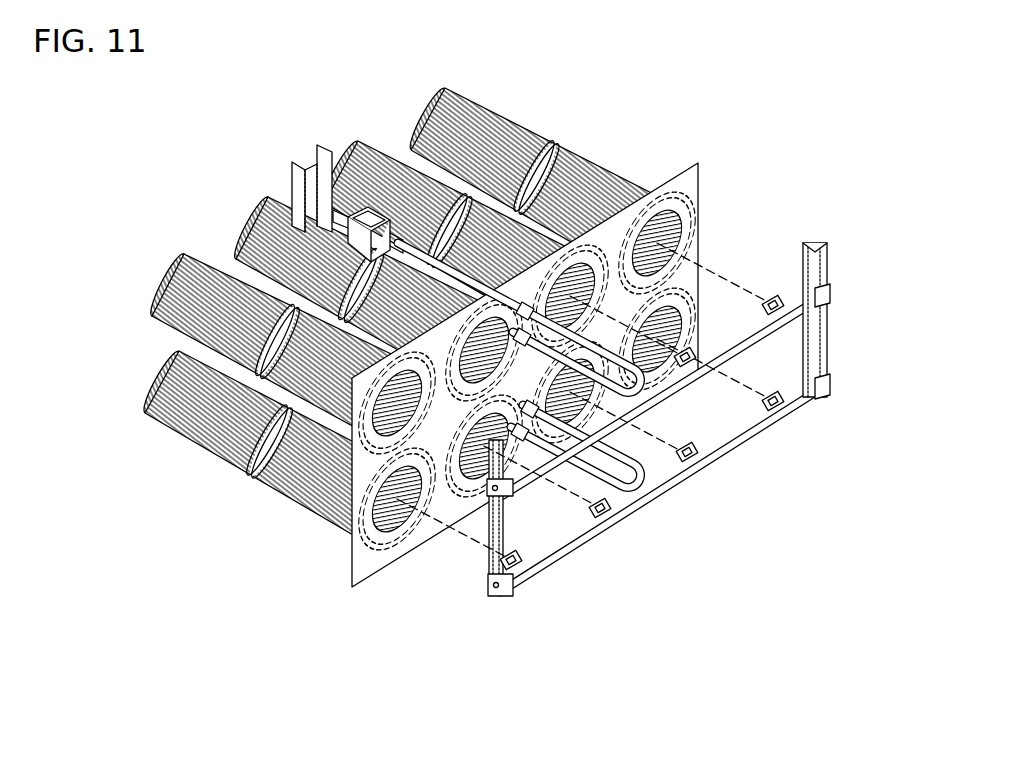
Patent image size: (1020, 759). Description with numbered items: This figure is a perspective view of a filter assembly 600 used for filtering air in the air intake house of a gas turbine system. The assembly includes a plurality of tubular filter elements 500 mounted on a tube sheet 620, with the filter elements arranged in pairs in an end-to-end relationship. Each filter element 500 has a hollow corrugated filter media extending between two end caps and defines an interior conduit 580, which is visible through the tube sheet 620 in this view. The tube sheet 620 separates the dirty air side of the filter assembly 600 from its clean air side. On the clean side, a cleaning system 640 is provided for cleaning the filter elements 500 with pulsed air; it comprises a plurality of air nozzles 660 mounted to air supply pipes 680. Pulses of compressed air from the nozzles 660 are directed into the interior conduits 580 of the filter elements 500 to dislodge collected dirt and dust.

The filter element 500 is at (497, 107).
The interior conduit 580 is at (672, 240).
The filter assembly 600 is at (566, 329).
The tube sheet 620 is at (698, 177).
The cleaning system 640 is at (657, 507).
The air nozzle 660 is at (790, 283).
The air supply pipe 680 is at (762, 430).